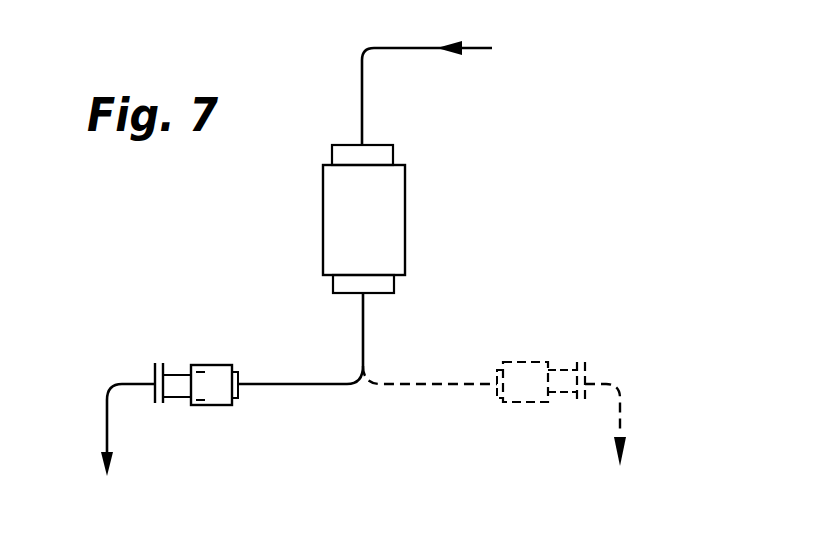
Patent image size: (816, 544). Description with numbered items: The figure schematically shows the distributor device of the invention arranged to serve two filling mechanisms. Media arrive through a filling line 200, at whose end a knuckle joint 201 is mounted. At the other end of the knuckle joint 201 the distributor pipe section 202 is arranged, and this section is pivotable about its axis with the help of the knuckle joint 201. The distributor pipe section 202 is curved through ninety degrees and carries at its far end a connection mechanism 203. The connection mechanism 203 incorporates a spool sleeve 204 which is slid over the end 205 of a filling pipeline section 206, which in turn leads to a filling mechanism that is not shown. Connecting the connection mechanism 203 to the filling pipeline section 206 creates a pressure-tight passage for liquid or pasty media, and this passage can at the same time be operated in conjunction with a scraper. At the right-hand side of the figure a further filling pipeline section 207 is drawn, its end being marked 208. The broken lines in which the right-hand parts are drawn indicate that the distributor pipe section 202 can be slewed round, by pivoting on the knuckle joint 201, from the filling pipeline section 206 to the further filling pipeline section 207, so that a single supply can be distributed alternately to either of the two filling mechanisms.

The filling line 200 is at (473, 48).
The knuckle joint 201 is at (398, 218).
The distributor pipe section 202 is at (363, 335).
The connection mechanism 203 is at (220, 365).
The spool sleeve 204 is at (182, 373).
The end of filling pipeline section 205 is at (170, 400).
The filling pipeline section 206 is at (107, 427).
The further filling pipeline section 207 is at (620, 428).
The end of further filling pipeline section 208 is at (567, 370).